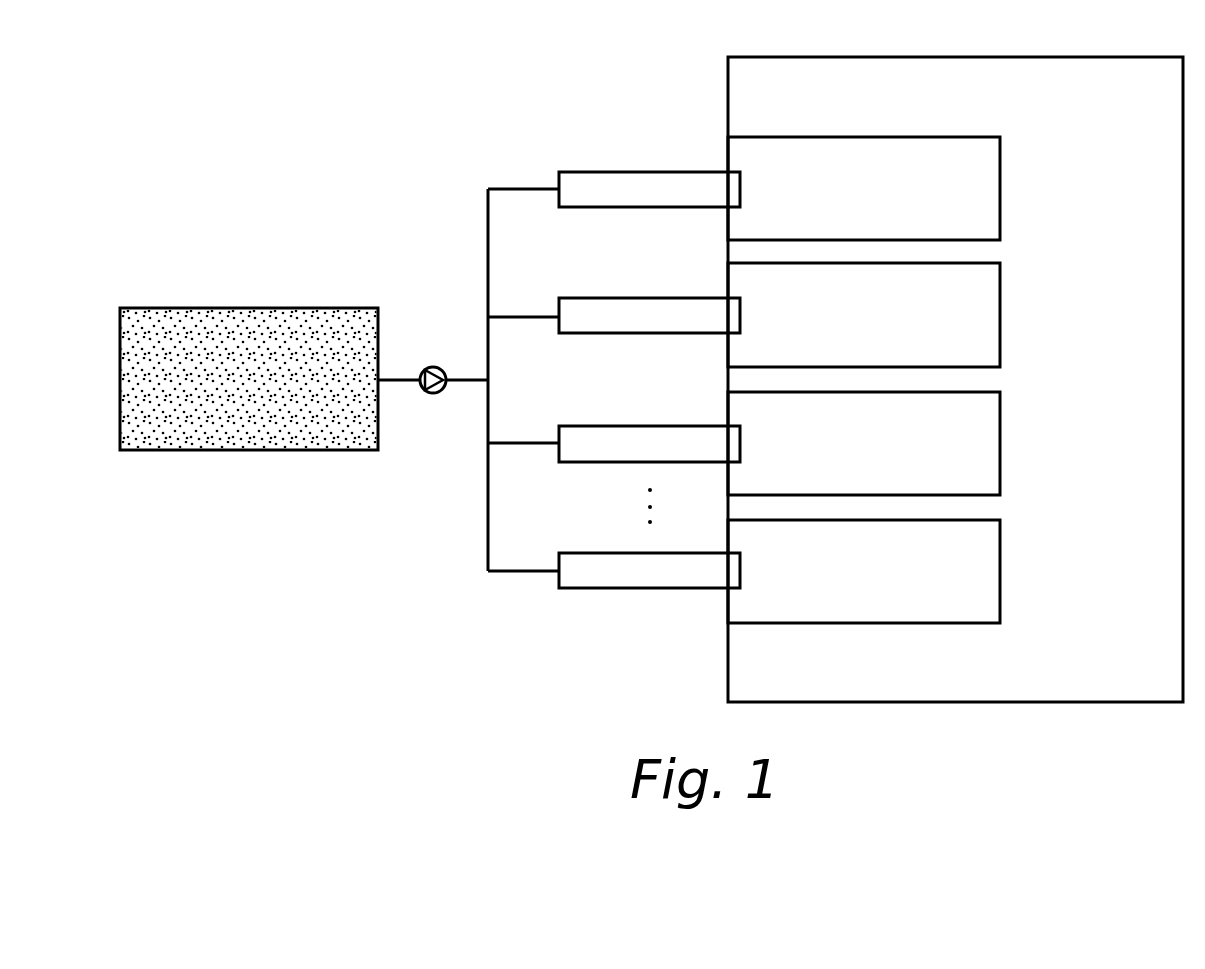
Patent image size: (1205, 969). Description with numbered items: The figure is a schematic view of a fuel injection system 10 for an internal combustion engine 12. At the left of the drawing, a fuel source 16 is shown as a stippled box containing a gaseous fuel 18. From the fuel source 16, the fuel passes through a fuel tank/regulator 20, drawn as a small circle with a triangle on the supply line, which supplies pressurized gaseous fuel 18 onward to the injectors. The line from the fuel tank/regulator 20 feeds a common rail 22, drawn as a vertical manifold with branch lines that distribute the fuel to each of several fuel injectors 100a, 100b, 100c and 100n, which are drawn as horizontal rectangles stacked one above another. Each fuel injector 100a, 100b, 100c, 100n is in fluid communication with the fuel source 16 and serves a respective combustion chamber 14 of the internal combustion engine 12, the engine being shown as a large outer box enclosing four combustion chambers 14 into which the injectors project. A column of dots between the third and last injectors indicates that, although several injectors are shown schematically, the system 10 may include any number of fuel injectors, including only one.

The fuel injection system 10 is at (380, 124).
The internal combustion engine 12 is at (1060, 55).
The combustion chamber 14 is at (953, 182).
The fuel source 16 is at (222, 308).
The gaseous fuel 18 is at (208, 383).
The fuel tank/regulator 20 is at (420, 393).
The common rail 22 is at (487, 248).
The fuel injector 100a is at (618, 183).
The fuel injector 100b is at (655, 313).
The fuel injector 100c is at (612, 445).
The fuel injector 100n is at (583, 570).